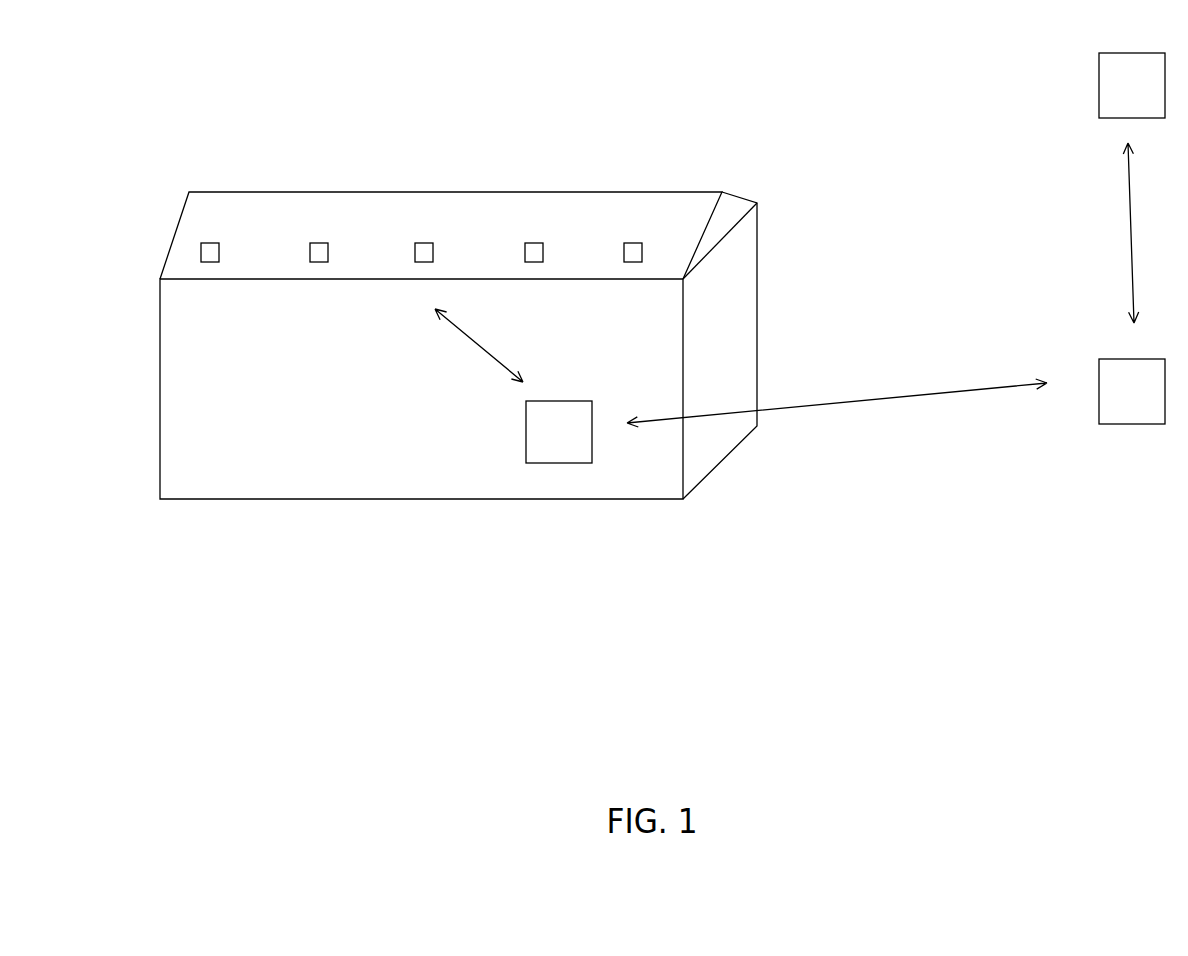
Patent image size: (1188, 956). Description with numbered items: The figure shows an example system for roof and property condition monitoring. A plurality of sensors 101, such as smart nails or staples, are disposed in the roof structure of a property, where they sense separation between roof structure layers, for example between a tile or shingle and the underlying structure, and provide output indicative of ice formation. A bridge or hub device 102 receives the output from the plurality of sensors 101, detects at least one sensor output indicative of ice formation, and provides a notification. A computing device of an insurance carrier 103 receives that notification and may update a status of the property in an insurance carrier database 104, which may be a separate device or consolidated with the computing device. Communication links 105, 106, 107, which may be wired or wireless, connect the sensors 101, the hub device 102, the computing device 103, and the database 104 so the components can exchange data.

The plurality of sensors 101 is at (624, 243).
The hub device 102 is at (559, 432).
The computing device of an insurance carrier 103 is at (1132, 391).
The insurance carrier database 104 is at (1132, 85).
The communication link 105 is at (457, 359).
The communication link 106 is at (844, 383).
The communication link 107 is at (1113, 262).